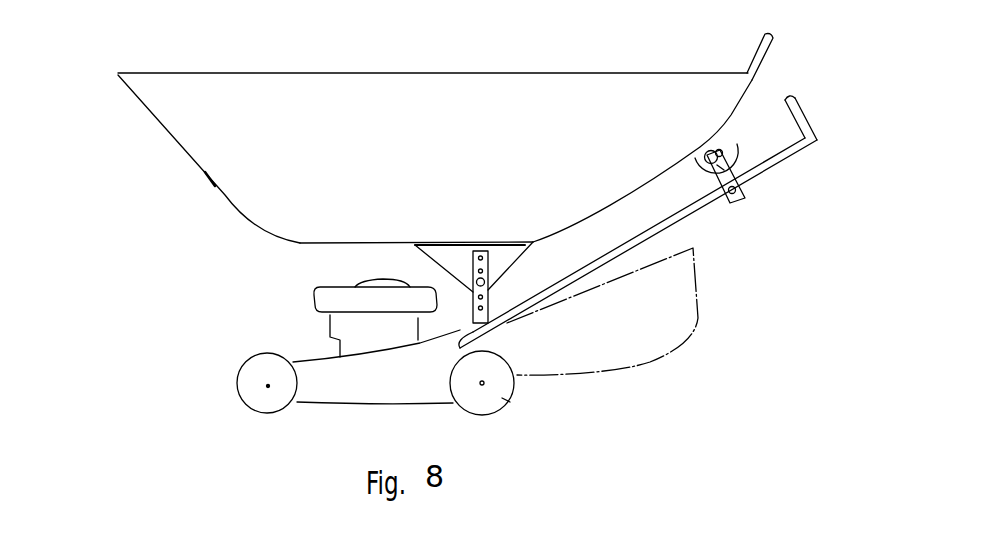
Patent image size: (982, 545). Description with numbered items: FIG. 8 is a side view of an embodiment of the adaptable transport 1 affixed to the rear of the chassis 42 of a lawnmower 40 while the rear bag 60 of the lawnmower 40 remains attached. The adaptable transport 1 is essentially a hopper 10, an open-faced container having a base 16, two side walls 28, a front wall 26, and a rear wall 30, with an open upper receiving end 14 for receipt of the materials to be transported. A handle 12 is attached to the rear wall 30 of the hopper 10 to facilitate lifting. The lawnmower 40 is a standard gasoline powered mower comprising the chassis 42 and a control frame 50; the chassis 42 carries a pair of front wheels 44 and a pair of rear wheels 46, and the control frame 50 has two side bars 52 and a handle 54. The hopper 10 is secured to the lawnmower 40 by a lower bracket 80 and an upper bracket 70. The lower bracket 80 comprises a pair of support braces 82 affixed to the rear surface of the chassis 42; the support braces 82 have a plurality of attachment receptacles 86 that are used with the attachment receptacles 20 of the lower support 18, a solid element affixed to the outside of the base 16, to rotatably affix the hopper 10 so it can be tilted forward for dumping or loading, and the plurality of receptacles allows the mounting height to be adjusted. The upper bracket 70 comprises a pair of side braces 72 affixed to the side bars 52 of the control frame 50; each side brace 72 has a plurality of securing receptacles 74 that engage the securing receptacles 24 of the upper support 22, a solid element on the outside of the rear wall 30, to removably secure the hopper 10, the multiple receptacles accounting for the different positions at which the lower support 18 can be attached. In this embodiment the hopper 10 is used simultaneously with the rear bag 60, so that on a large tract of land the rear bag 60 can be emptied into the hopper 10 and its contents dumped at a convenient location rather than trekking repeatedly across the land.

The adaptable transport 1 is at (822, 237).
The hopper 10 is at (94, 166).
The handle 12 is at (775, 43).
The upper receiving end 14 is at (487, 73).
The base 16 is at (377, 240).
The lower support 18 is at (507, 253).
The attachment receptacles 20 is at (486, 276).
The upper support 22 is at (725, 135).
The securing receptacles 24 is at (723, 141).
The front wall 26 is at (210, 177).
The side walls 28 is at (478, 146).
The rear wall 30 is at (630, 197).
The lawnmower 40 is at (284, 328).
The chassis 42 is at (380, 391).
The front wheels 44 is at (260, 407).
The rear wheels 46 is at (388, 337).
The control frame 50 is at (696, 230).
The side bars 52 is at (668, 222).
The handle 54 is at (802, 117).
The rear bag 60 is at (627, 331).
The upper bracket 70 is at (770, 182).
The side braces 72 is at (743, 200).
The securing receptacles 74 is at (721, 167).
The lower bracket 80 is at (411, 264).
The support braces 82 is at (472, 310).
The attachment receptacles 86 is at (472, 291).